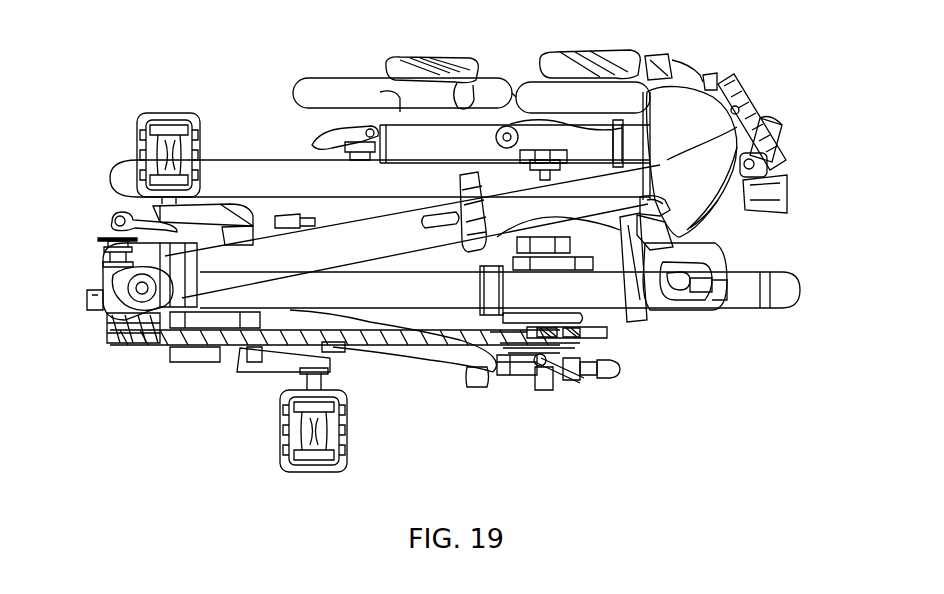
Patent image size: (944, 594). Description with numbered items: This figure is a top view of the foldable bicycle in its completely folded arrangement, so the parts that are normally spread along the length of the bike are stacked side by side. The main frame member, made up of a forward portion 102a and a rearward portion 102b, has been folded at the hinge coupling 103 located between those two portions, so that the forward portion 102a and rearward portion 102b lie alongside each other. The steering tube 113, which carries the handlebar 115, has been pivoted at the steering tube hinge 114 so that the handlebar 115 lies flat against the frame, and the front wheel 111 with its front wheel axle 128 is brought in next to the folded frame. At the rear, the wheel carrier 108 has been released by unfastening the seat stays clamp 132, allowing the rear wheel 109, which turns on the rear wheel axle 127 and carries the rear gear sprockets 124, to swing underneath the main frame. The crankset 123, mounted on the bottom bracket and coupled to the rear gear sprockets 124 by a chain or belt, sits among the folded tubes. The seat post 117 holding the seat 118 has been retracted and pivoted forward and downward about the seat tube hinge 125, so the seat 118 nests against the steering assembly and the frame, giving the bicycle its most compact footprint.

The forward portion of main frame member 102a is at (713, 260).
The rearward portion of main frame member 102b is at (285, 312).
The hinge coupling 103 is at (640, 303).
The wheel carrier 108 is at (470, 380).
The rear wheel 109 is at (747, 310).
The front wheel 111 is at (290, 158).
The steering tube 113 is at (622, 86).
The steering tube hinge 114 is at (763, 120).
The handlebar 115 is at (303, 77).
The seat post 117 is at (247, 288).
The seat 118 is at (713, 217).
The crankset 123 is at (333, 347).
The rear gear sprockets 124 is at (593, 340).
The seat tube hinge 125 is at (140, 317).
The rear wheel axle 127 is at (553, 387).
The front wheel axle 128 is at (343, 143).
The seat stays clamp 132 is at (122, 210).